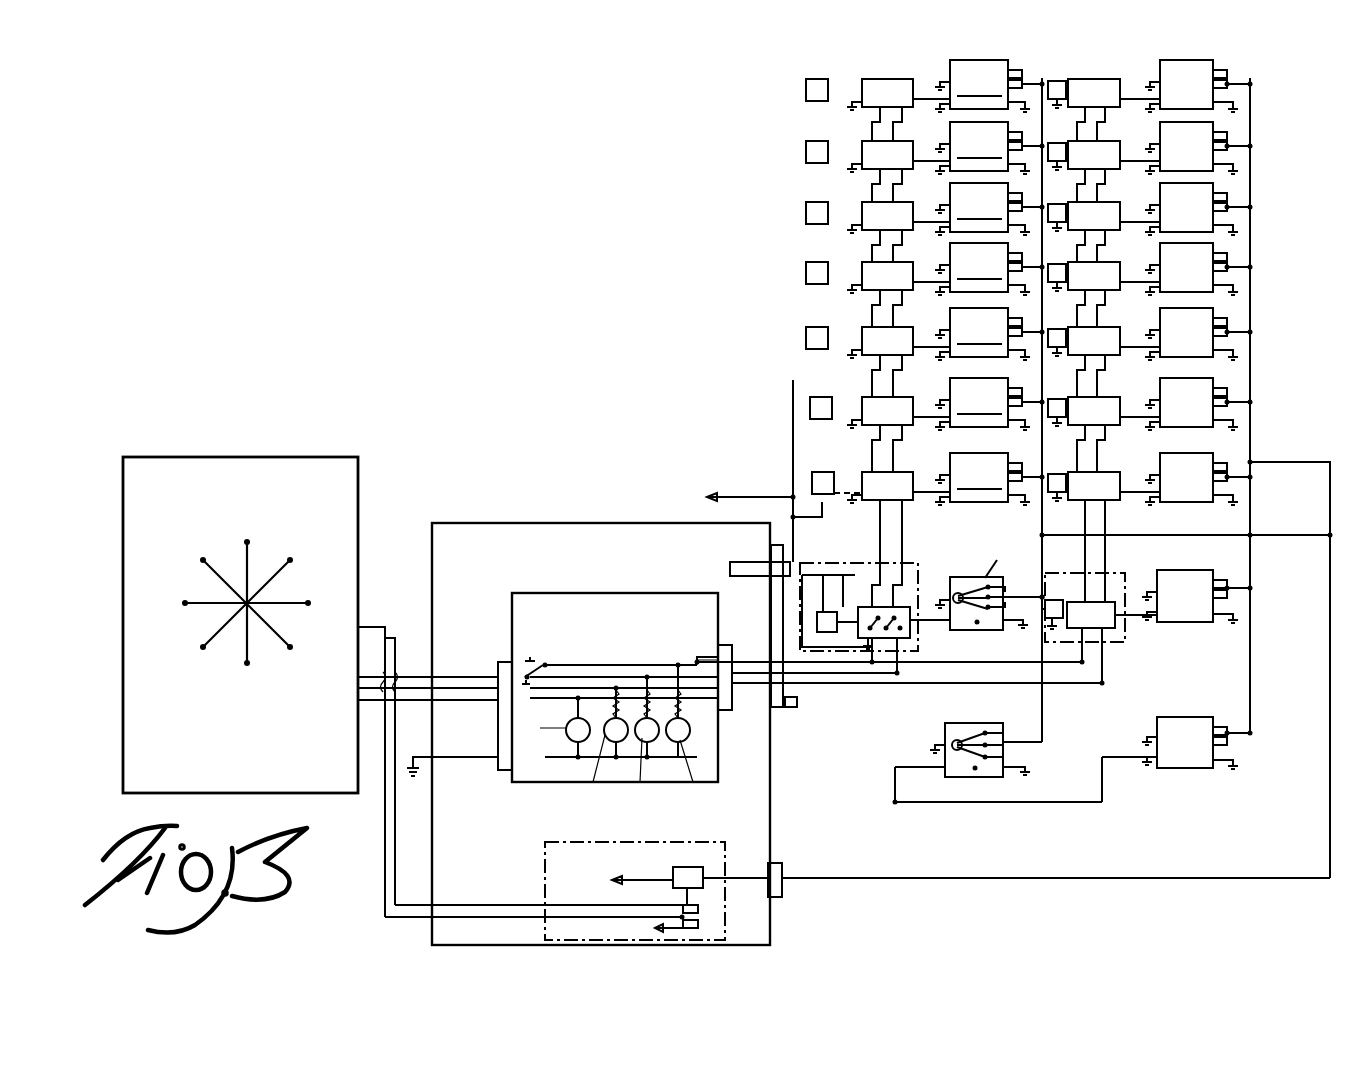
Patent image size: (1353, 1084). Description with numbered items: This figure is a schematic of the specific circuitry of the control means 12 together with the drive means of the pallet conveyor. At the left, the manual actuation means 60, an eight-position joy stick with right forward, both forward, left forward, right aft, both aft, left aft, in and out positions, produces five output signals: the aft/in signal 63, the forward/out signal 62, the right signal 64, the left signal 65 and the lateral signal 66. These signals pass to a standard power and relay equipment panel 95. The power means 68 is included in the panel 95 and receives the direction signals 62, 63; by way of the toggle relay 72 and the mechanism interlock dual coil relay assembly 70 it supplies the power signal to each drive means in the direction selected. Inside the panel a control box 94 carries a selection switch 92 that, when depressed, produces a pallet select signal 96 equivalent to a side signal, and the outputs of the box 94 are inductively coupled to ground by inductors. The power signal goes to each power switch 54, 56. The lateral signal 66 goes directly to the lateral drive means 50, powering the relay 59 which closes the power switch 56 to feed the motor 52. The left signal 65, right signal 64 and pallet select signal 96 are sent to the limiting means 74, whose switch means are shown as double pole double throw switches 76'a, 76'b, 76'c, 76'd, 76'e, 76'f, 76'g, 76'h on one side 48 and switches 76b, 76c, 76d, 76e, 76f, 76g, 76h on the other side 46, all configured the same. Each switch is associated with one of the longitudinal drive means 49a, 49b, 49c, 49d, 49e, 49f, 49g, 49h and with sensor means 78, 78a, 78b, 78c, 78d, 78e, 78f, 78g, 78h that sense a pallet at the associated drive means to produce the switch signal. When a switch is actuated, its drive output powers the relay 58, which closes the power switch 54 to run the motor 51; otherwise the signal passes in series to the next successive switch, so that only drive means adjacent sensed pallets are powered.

The control means 12 is at (610, 482).
The side 46 is at (1228, 62).
The side 48 is at (945, 66).
The longitudinal drive means 49a is at (1190, 622).
The longitudinal drive means 49b is at (1195, 502).
The longitudinal drive means 49c is at (1213, 406).
The longitudinal drive means 49d is at (1213, 336).
The longitudinal drive means 49e is at (1213, 272).
The longitudinal drive means 49f is at (1213, 212).
The longitudinal drive means 49g is at (1213, 150).
The longitudinal drive means 49h is at (1213, 90).
The lateral drive means 50 is at (1192, 768).
The motor 51 is at (965, 585).
The motor 52 is at (962, 735).
The power switch 54 is at (985, 578).
The power switch 56 is at (975, 730).
The relay 58 is at (945, 628).
The relay 59 is at (975, 770).
The manual actuation means 60 is at (257, 457).
The forward or out signal 62 is at (395, 640).
The aft or in signal 63 is at (365, 627).
The right or first side signal 64 is at (450, 688).
The left or second side signal 65 is at (420, 688).
The lateral signal 66 is at (413, 700).
The power means 68 is at (545, 882).
The mechanism interlock dual coil relay assembly 70 is at (700, 872).
The toggle relay 72 is at (700, 928).
The limiting means 74 is at (771, 540).
The switch means 76b is at (1100, 485).
The switch means 76c is at (1100, 410).
The switch means 76d is at (1100, 340).
The switch means 76e is at (1100, 275).
The switch means 76f is at (1100, 215).
The switch means 76g is at (1100, 154).
The switch means 76h is at (1100, 92).
The double pole double throw switch 76'a is at (1038, 611).
The double pole double throw switch 76'b is at (891, 539).
The double pole double throw switch 76'c is at (879, 434).
The double pole double throw switch 76'd is at (875, 362).
The double pole double throw switch 76'e is at (875, 294).
The double pole double throw switch 76'f is at (877, 232).
The double pole double throw switch 76'g is at (877, 171).
The double pole double throw switch 76'h is at (870, 110).
The sensor means 78 is at (1052, 600).
The sensor means 78a is at (817, 620).
The sensor means 78b is at (812, 487).
The sensor means 78c is at (810, 408).
The sensor means 78d is at (806, 338).
The sensor means 78e is at (806, 273).
The sensor means 78f is at (806, 214).
The sensor means 78g is at (806, 152).
The sensor means 78h is at (806, 88).
The selection switch 92 is at (545, 660).
The control box 94 is at (643, 593).
The power and relay equipment panel 95 is at (542, 523).
The pallet select signal 96 is at (635, 665).